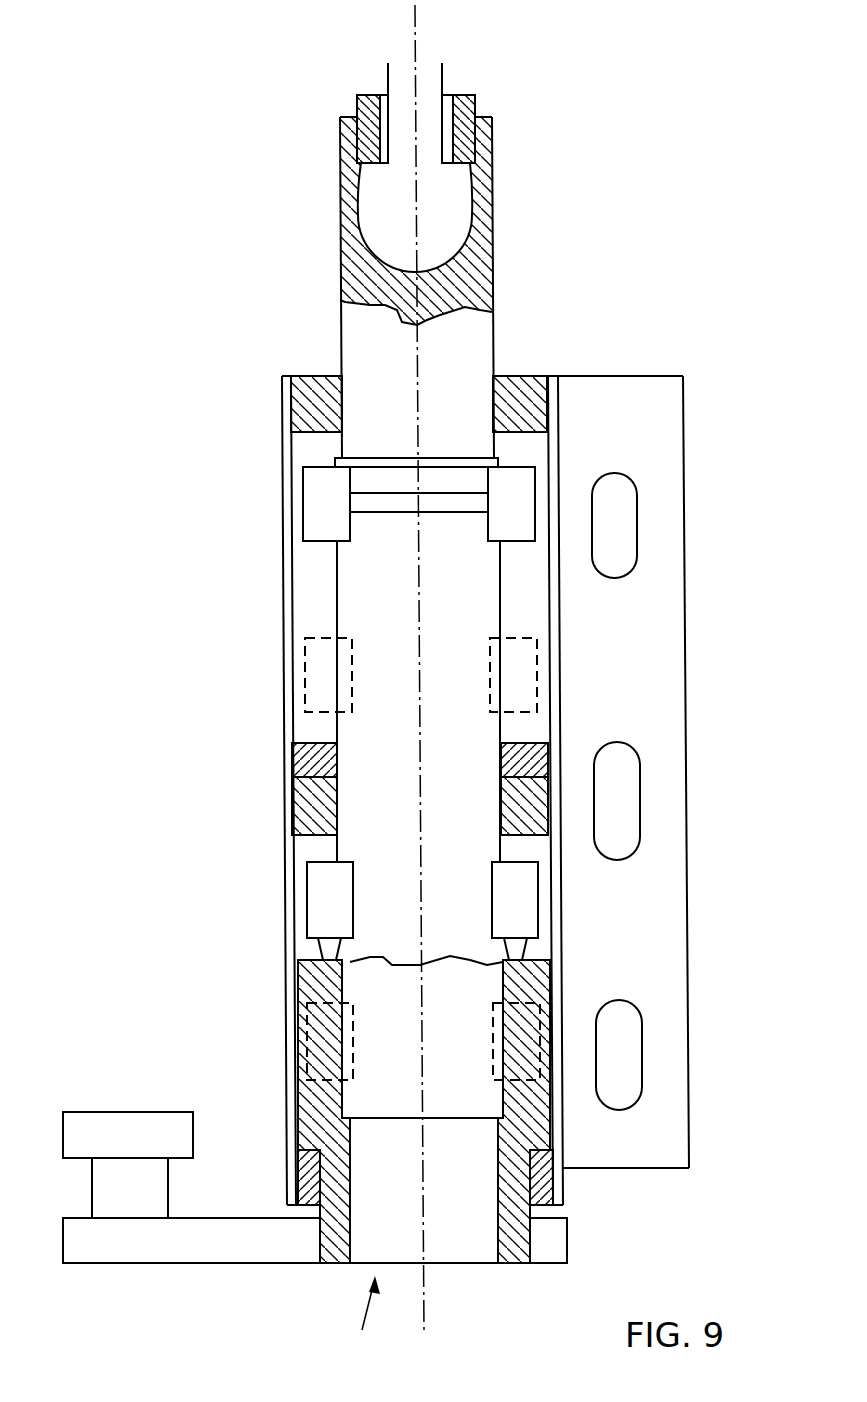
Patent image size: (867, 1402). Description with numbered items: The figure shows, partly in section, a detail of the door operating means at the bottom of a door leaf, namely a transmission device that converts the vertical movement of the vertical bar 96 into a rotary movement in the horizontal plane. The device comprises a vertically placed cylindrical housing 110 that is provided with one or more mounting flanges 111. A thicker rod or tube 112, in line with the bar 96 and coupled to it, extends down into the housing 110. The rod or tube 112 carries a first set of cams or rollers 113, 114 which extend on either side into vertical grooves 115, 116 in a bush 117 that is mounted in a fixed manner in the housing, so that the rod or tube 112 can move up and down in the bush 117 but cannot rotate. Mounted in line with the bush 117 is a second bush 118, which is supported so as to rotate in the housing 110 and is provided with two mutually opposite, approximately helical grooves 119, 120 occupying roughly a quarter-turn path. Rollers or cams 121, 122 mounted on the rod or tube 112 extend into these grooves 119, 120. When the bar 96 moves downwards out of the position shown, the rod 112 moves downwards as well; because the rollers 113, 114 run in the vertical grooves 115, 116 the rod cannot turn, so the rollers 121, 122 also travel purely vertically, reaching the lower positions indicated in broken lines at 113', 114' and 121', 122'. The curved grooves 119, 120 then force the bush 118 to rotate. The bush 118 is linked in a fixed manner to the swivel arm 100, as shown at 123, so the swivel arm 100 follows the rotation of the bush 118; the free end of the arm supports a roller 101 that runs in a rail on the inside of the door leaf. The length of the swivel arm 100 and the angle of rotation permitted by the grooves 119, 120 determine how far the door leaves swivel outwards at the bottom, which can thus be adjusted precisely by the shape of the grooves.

The vertical bar 96 is at (428, 82).
The swivel arm 100 is at (198, 1238).
The roller 101 is at (120, 1130).
The cylindrical housing 110 is at (288, 628).
The mounting flange 111 is at (660, 820).
The rod or tube 112 is at (462, 353).
The cam or roller of first set 113 is at (341, 499).
The cam or roller of first set (displaced position) 113' is at (268, 675).
The cam or roller of first set 114 is at (621, 476).
The cam or roller of first set (displaced position) 114' is at (621, 675).
The vertical groove 115 is at (308, 582).
The vertical groove 116 is at (527, 602).
The bush 117 is at (547, 755).
The second bush 118 is at (315, 992).
The helical groove 119 is at (315, 950).
The helical groove 120 is at (520, 947).
The roller or cam of second set 121 is at (269, 900).
The roller or cam of second set (displaced position) 121' is at (278, 1041).
The roller or cam of second set 122 is at (630, 900).
The roller or cam of second set (displaced position) 122' is at (631, 1062).
The fixed link between second bush and swivel arm 123 is at (356, 1320).